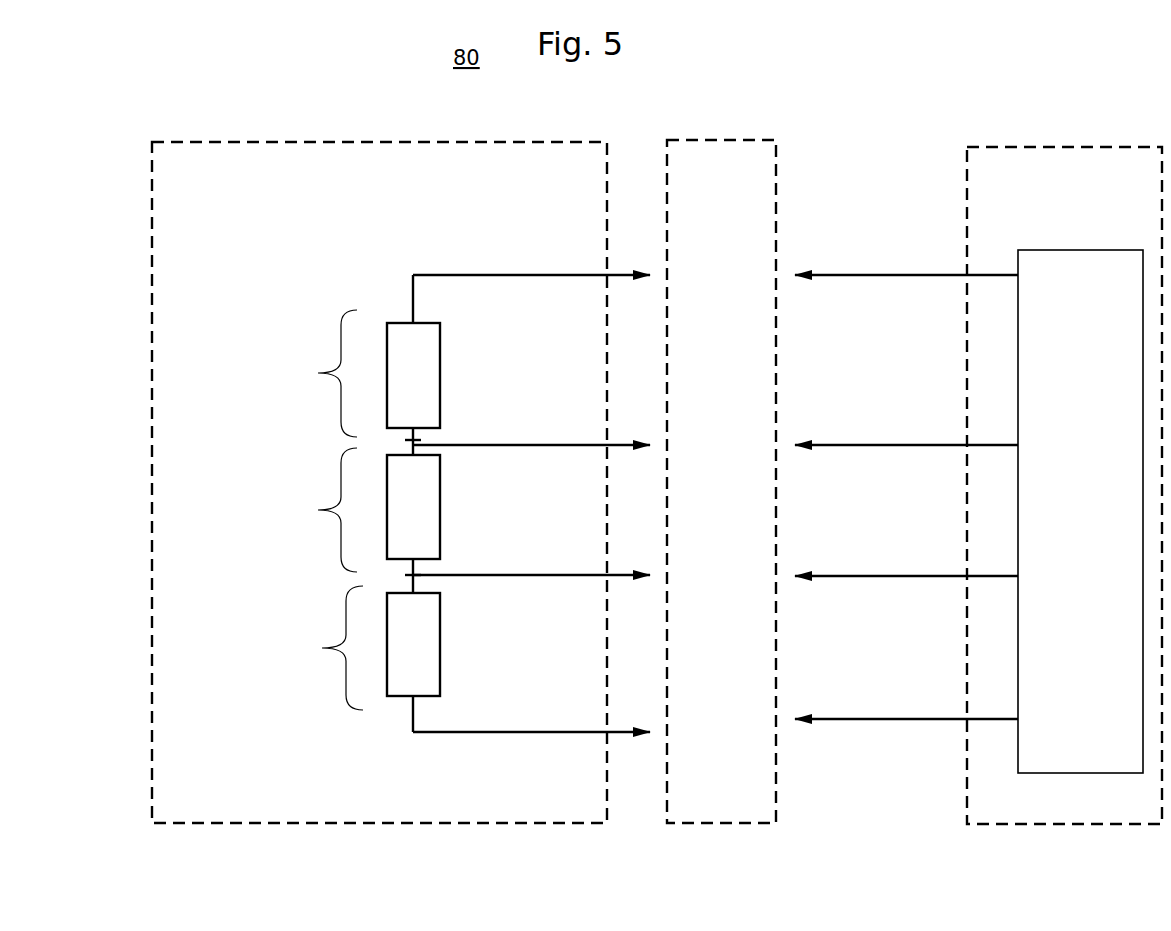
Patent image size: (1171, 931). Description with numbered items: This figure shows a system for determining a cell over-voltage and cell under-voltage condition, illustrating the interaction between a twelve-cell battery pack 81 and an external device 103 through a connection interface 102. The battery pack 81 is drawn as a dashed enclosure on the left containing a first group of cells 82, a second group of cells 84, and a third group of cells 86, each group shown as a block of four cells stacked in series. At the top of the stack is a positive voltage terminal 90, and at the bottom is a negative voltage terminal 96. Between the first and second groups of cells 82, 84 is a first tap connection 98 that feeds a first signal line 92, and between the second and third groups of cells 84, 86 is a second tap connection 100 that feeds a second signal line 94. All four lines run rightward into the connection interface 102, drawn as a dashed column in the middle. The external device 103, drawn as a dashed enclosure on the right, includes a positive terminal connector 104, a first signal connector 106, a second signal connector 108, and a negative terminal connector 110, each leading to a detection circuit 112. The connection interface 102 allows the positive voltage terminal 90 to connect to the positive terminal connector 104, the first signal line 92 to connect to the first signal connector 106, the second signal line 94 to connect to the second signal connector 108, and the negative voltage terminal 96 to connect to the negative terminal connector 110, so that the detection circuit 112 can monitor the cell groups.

The battery pack 81 is at (288, 132).
The first group of cells 82 is at (293, 375).
The second group of cells 84 is at (293, 510).
The third group of cells 86 is at (293, 653).
The positive voltage terminal 90 is at (512, 270).
The first signal line 92 is at (503, 433).
The second signal line 94 is at (496, 573).
The negative voltage terminal 96 is at (488, 717).
The first tap connection 98 is at (408, 442).
The second tap connection 100 is at (408, 578).
The connection interface 102 is at (740, 130).
The external device 103 is at (1045, 142).
The positive terminal connector 104 is at (915, 283).
The first signal connector 106 is at (907, 447).
The second signal connector 108 is at (900, 583).
The negative terminal connector 110 is at (907, 727).
The detection circuit 112 is at (1075, 784).